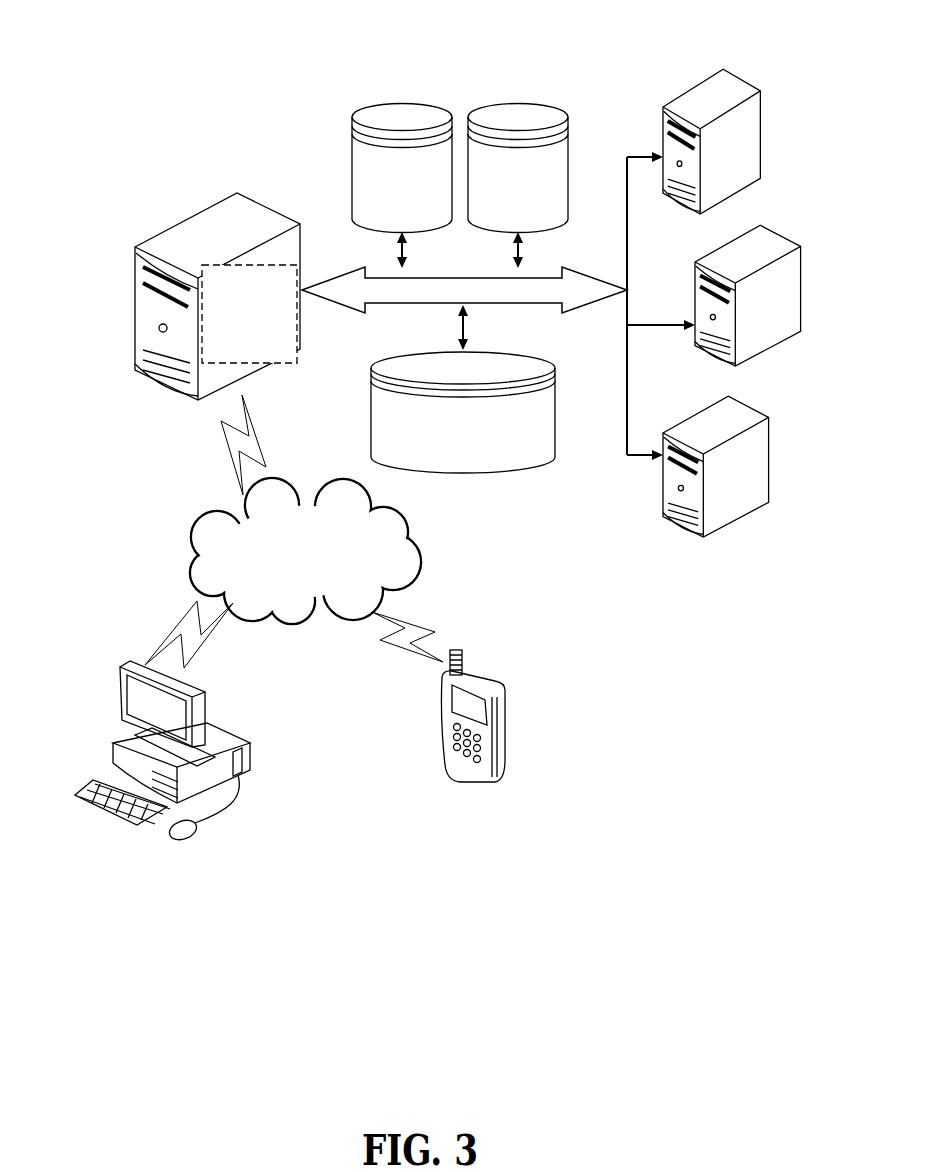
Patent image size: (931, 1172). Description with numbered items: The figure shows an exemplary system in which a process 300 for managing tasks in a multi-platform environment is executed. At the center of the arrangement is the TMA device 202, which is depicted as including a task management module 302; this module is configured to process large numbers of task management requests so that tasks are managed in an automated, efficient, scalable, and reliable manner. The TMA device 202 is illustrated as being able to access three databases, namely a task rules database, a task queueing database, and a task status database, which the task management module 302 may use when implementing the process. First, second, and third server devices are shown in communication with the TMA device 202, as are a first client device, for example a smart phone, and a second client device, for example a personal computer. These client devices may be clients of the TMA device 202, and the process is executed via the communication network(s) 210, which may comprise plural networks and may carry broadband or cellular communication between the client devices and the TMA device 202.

The process for managing tasks in a multi-platform environment 300 is at (130, 104).
The TMA device 202 is at (186, 281).
The task management module 302 is at (249, 314).
The communication network(s) 210 is at (420, 410).